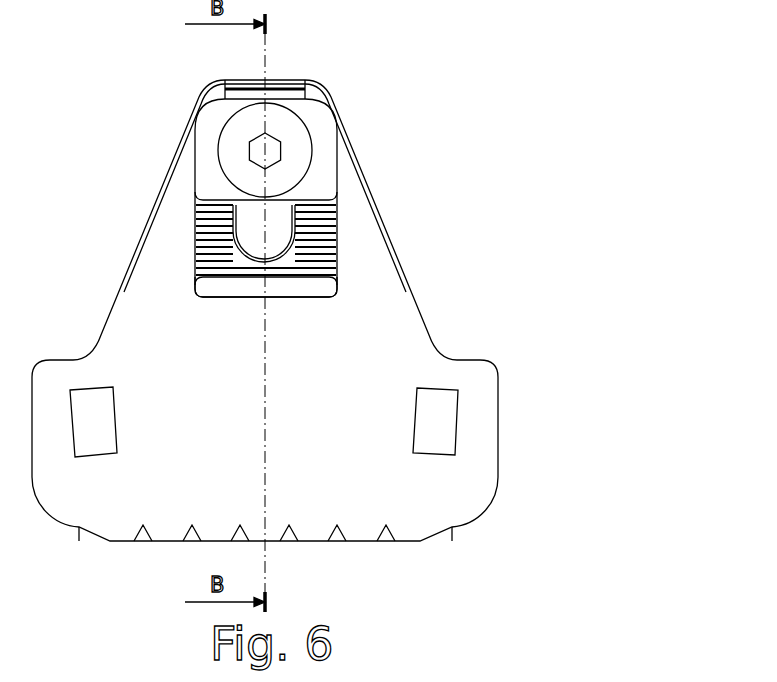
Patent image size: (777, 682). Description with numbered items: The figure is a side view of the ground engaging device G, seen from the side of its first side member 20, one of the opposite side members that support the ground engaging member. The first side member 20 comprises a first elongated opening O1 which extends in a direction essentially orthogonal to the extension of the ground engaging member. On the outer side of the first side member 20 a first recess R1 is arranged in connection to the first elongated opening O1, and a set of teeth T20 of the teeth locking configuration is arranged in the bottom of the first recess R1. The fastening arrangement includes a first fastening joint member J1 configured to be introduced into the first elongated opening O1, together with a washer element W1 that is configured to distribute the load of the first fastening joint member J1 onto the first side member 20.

The first side member 20 is at (465, 516).
The ground engaging device G is at (362, 70).
The washer element W1 is at (335, 178).
The first fastening joint member J1 is at (214, 150).
The teeth T20 is at (335, 247).
The first elongated opening O1 is at (256, 237).
The first recess R1 is at (188, 265).